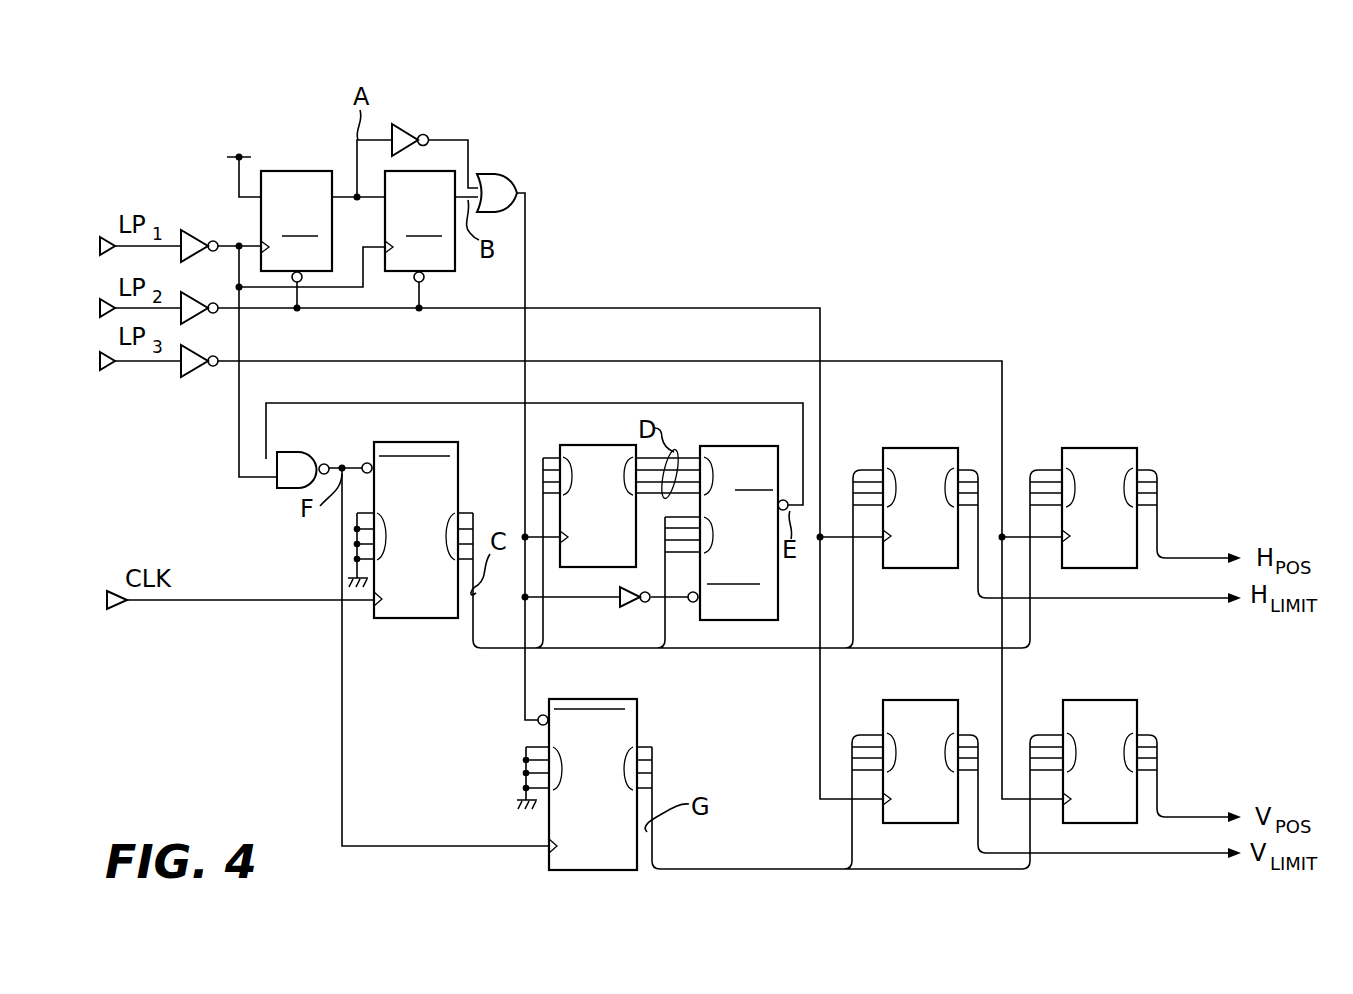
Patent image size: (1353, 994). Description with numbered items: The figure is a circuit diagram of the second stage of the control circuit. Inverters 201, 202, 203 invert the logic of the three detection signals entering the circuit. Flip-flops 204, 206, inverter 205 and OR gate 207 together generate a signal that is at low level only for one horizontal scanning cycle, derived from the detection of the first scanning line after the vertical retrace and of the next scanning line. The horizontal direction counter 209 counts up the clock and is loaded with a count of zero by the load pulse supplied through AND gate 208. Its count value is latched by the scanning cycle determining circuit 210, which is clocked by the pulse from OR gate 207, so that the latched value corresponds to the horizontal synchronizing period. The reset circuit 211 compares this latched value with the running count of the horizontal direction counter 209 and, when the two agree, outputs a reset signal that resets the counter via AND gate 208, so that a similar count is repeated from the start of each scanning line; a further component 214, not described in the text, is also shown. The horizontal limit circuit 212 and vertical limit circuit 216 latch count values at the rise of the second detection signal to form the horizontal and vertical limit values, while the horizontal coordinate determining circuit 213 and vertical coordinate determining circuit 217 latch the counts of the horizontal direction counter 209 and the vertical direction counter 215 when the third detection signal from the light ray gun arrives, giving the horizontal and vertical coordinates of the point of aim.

The inverter 201 is at (186, 231).
The inverter 202 is at (186, 293).
The inverter 203 is at (187, 374).
The flip-flop 204 is at (292, 171).
The inverter 205 is at (405, 124).
The flip-flop 206 is at (455, 171).
The OR gate 207 is at (509, 174).
The AND gate 208 is at (293, 452).
The horizontal direction counter 209 is at (385, 442).
The scanning cycle determining circuit 210 is at (570, 445).
The reset circuit 211 is at (718, 446).
The horizontal limit circuit 212 is at (902, 448).
The horizontal coordinate determining circuit 213 is at (1067, 448).
The inverter 214 is at (617, 616).
The vertical direction counter 215 is at (637, 703).
The vertical limit circuit 216 is at (910, 699).
The vertical coordinate determining circuit 217 is at (1137, 702).